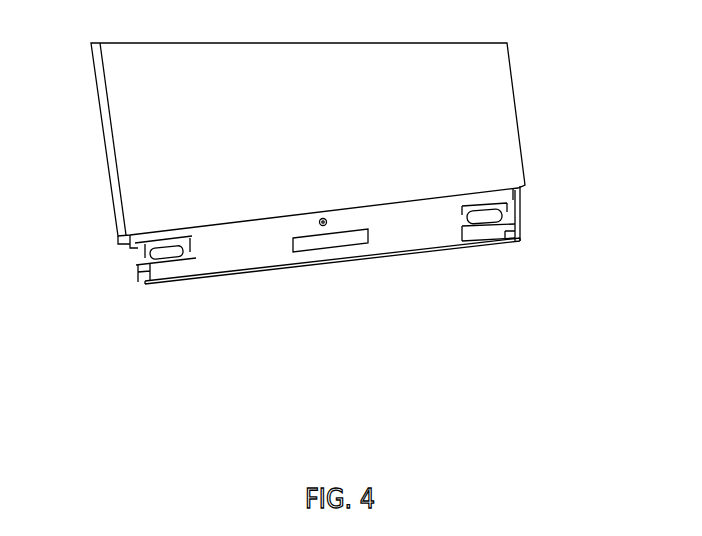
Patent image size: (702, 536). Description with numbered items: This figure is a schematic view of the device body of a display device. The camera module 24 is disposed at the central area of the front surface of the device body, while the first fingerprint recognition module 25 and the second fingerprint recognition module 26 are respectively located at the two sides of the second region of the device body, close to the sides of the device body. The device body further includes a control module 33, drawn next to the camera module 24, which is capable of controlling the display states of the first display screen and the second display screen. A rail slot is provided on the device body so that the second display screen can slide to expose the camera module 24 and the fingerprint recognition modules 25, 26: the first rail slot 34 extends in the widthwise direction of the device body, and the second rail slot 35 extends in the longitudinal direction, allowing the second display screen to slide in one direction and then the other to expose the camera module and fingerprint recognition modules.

The camera module 24 is at (325, 225).
The first fingerprint recognition module 25 is at (162, 263).
The second fingerprint recognition module 26 is at (503, 236).
The control module 33 is at (316, 246).
The first rail slot 34 is at (173, 281).
The second rail slot 35 is at (197, 275).